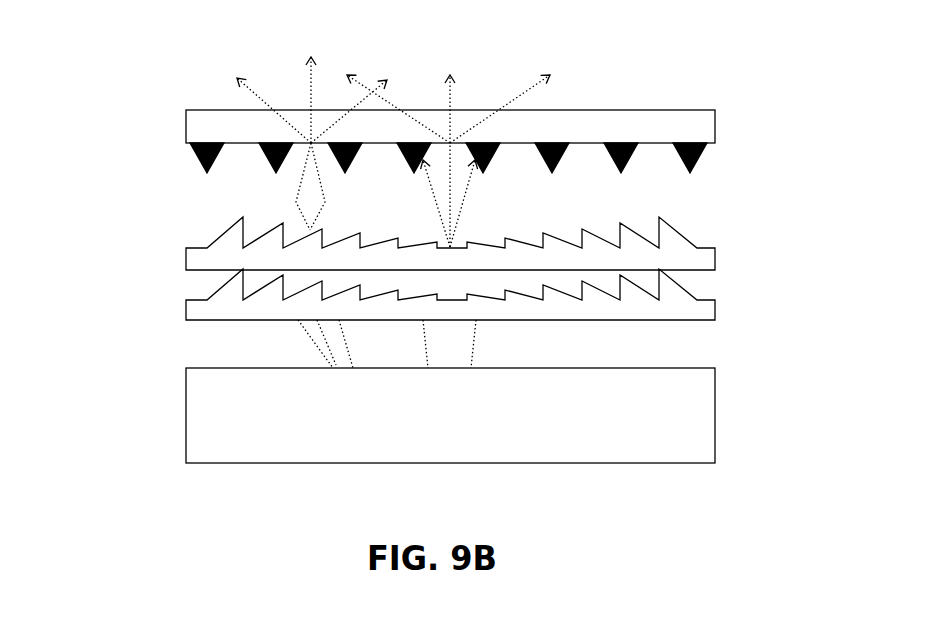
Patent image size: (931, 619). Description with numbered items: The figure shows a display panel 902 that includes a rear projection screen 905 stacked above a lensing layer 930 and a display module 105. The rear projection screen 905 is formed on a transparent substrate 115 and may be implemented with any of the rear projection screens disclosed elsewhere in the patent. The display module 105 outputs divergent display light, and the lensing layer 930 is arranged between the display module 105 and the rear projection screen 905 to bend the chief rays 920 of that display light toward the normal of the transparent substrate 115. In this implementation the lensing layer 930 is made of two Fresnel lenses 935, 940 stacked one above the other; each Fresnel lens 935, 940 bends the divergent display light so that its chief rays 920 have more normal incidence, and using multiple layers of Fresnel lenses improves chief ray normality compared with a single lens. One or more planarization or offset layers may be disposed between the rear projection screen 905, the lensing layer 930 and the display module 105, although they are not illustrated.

The display panel 902 is at (151, 65).
The rear projection screen 905 is at (730, 102).
The transparent substrate 115 is at (450, 141).
The lensing layer 930 is at (730, 222).
The Fresnel lens 935 is at (186, 257).
The Fresnel lens 940 is at (186, 306).
The display module 105 is at (450, 415).
The chief ray 920 is at (333, 361).